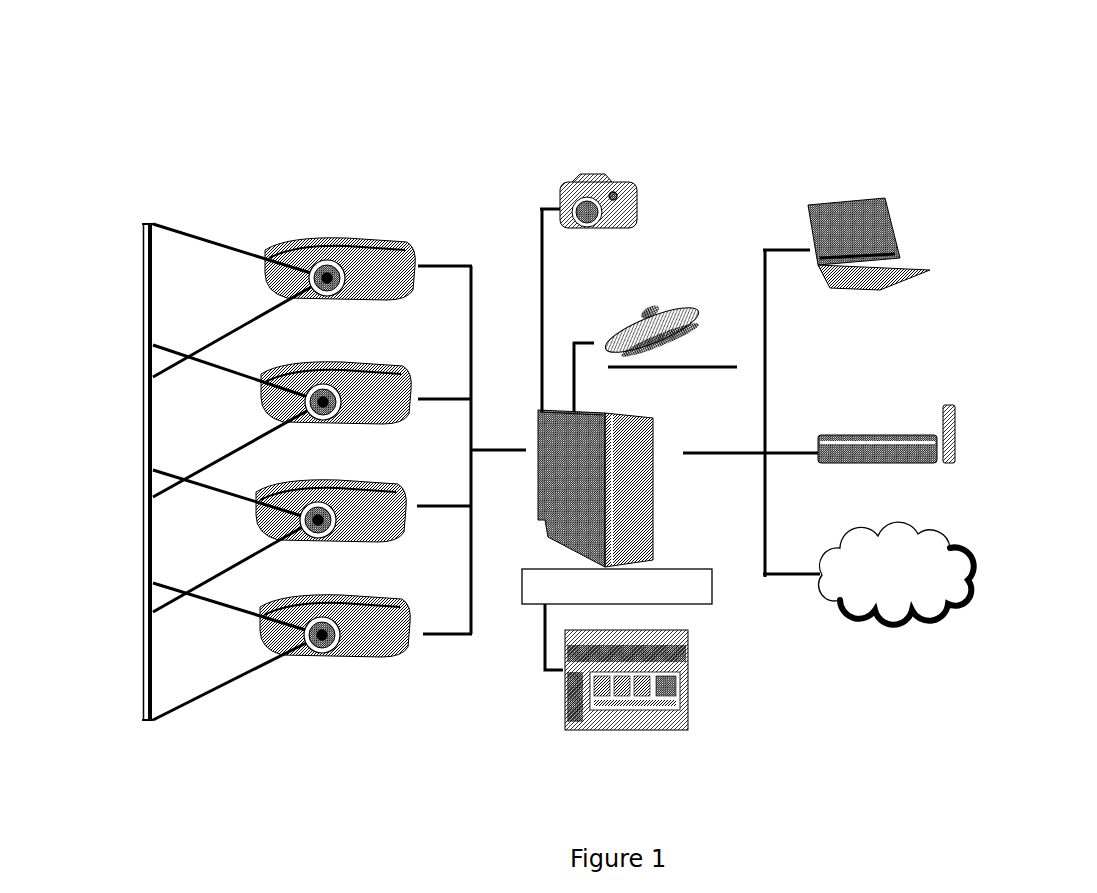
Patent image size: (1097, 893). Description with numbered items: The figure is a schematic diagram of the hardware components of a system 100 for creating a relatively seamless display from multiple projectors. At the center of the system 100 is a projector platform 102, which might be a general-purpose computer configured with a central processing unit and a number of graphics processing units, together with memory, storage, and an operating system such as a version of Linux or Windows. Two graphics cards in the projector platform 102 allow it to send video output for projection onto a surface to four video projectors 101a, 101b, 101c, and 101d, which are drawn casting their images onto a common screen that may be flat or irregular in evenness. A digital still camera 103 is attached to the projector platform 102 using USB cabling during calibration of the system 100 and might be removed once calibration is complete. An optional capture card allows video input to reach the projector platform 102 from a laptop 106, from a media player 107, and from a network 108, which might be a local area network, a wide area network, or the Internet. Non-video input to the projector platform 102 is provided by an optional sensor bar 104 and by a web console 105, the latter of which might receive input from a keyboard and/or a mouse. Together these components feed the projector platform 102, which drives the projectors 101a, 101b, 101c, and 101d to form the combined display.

The system 100 is at (553, 442).
The video projector 101a is at (305, 233).
The video projector 101b is at (263, 386).
The video projector 101c is at (263, 517).
The video projector 101d is at (330, 653).
The projector platform 102 is at (534, 411).
The digital still camera 103 is at (600, 158).
The sensor bar 104 is at (678, 275).
The web console 105 is at (700, 708).
The laptop 106 is at (900, 193).
The media player 107 is at (940, 403).
The network 108 is at (975, 583).